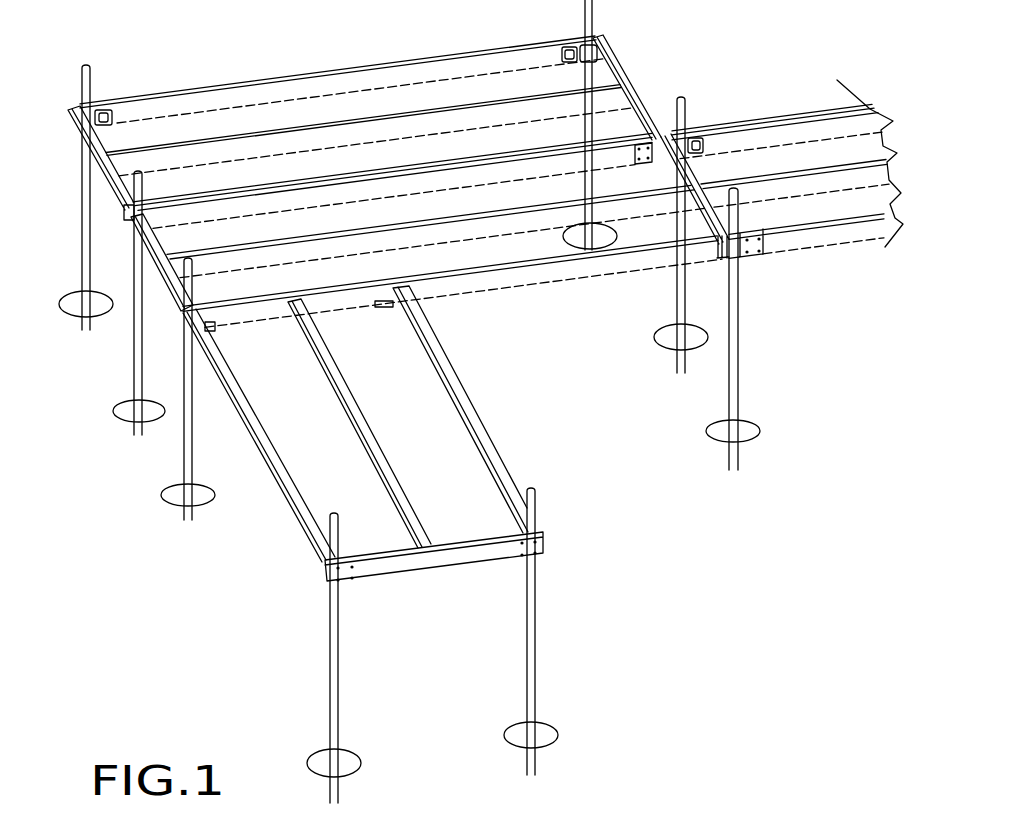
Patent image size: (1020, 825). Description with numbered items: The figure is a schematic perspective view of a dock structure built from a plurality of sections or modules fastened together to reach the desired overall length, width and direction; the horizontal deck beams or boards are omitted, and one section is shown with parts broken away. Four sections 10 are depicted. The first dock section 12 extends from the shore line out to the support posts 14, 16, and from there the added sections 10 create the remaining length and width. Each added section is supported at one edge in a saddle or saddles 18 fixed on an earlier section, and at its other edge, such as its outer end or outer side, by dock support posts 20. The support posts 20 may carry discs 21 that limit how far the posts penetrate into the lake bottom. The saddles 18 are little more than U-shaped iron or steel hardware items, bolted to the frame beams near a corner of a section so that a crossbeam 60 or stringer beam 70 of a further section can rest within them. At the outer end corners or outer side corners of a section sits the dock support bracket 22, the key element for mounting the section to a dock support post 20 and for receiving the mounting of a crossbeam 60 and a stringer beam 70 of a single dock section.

The sections 10 is at (388, 74).
The dock section 12 is at (851, 231).
The support post 14 is at (671, 290).
The support post 16 is at (738, 332).
The saddle 18 is at (209, 326).
The dock support post 20 is at (80, 256).
The disc 21 is at (553, 727).
The dock support bracket 22 is at (114, 118).
The crossbeam 60 is at (325, 308).
The stringer beam 70 is at (613, 135).